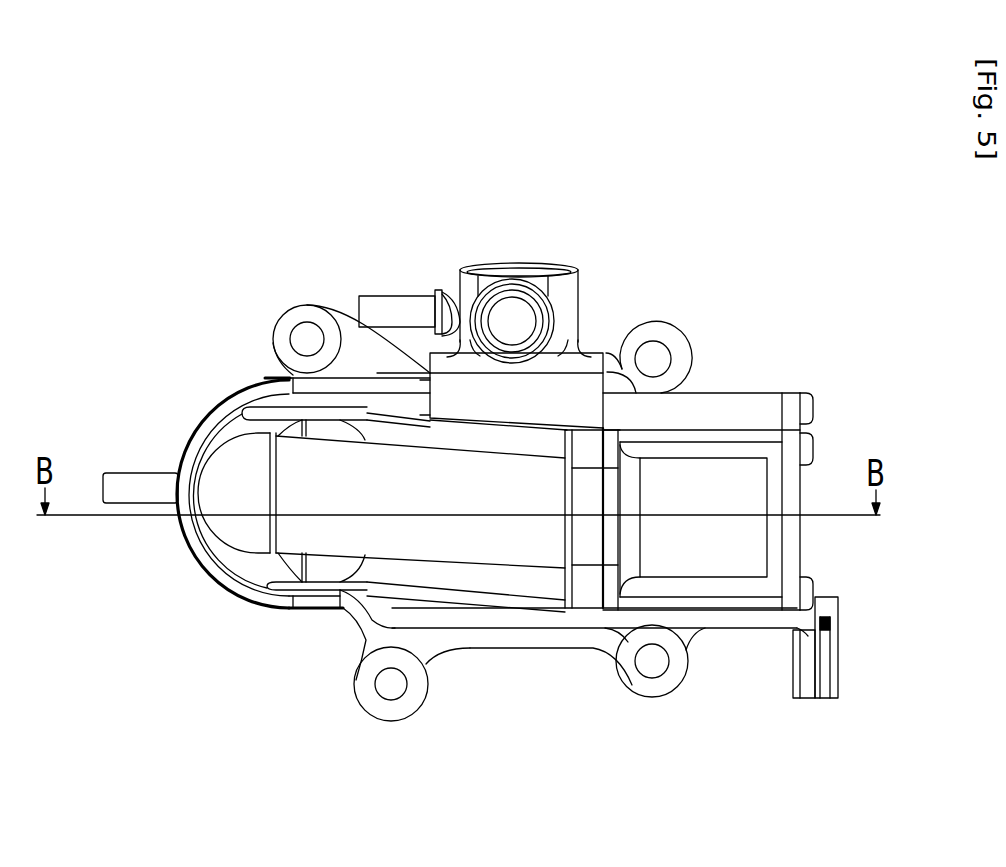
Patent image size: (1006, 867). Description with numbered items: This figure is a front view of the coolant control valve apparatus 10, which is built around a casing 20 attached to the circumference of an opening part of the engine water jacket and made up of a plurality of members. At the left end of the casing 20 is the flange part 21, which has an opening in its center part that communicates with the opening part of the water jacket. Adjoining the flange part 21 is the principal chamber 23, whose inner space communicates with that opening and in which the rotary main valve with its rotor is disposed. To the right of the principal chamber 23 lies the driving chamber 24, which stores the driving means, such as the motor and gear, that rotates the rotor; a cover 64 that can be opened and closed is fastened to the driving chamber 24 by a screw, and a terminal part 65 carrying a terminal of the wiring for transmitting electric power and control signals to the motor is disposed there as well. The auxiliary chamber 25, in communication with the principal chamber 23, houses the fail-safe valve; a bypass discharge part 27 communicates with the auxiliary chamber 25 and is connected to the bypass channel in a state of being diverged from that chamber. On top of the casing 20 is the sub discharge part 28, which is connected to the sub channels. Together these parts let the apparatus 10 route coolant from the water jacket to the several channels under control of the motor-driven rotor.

The coolant control valve apparatus 10 is at (735, 378).
The casing 20 is at (588, 396).
The flange part 21 is at (415, 700).
The principal chamber 23 is at (530, 548).
The driving chamber 24 is at (730, 565).
The auxiliary chamber 25 is at (243, 537).
The bypass discharge part 27 is at (148, 483).
The sub discharge part 28 is at (507, 278).
The cover 64 is at (795, 483).
The terminal part 65 is at (828, 655).